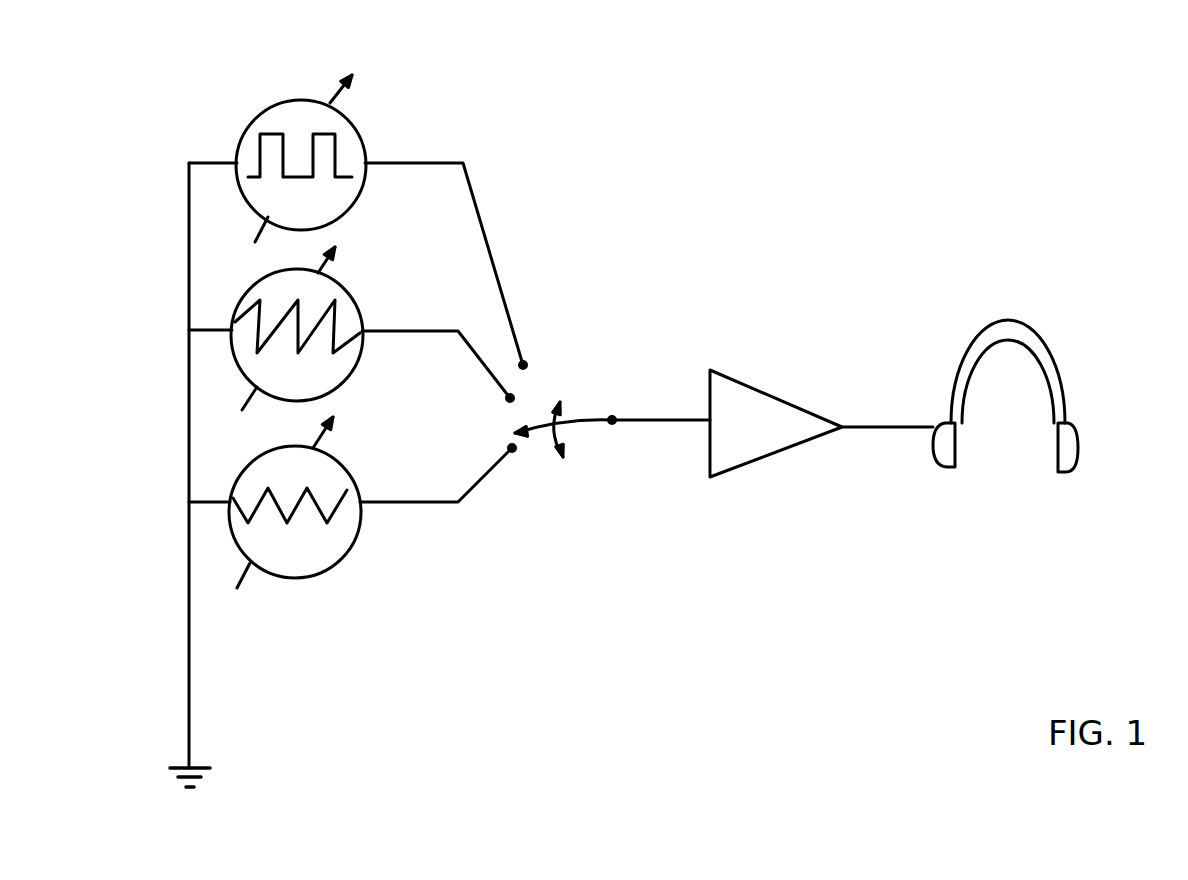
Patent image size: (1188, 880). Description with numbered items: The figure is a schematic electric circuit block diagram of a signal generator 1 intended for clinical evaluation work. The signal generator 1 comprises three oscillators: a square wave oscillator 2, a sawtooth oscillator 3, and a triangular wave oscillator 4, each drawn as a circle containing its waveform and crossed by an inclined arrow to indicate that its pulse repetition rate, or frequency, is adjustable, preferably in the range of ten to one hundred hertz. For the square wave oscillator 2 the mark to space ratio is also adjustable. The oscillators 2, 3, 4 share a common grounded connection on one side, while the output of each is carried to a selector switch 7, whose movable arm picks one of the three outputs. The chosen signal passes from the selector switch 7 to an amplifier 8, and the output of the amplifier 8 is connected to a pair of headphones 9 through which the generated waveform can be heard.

The signal generator 1 is at (835, 108).
The square wave oscillator 2 is at (357, 203).
The sawtooth oscillator 3 is at (352, 377).
The triangular wave oscillator 4 is at (355, 542).
The selector switch 7 is at (575, 367).
The amplifier 8 is at (782, 425).
The headphones 9 is at (1102, 372).